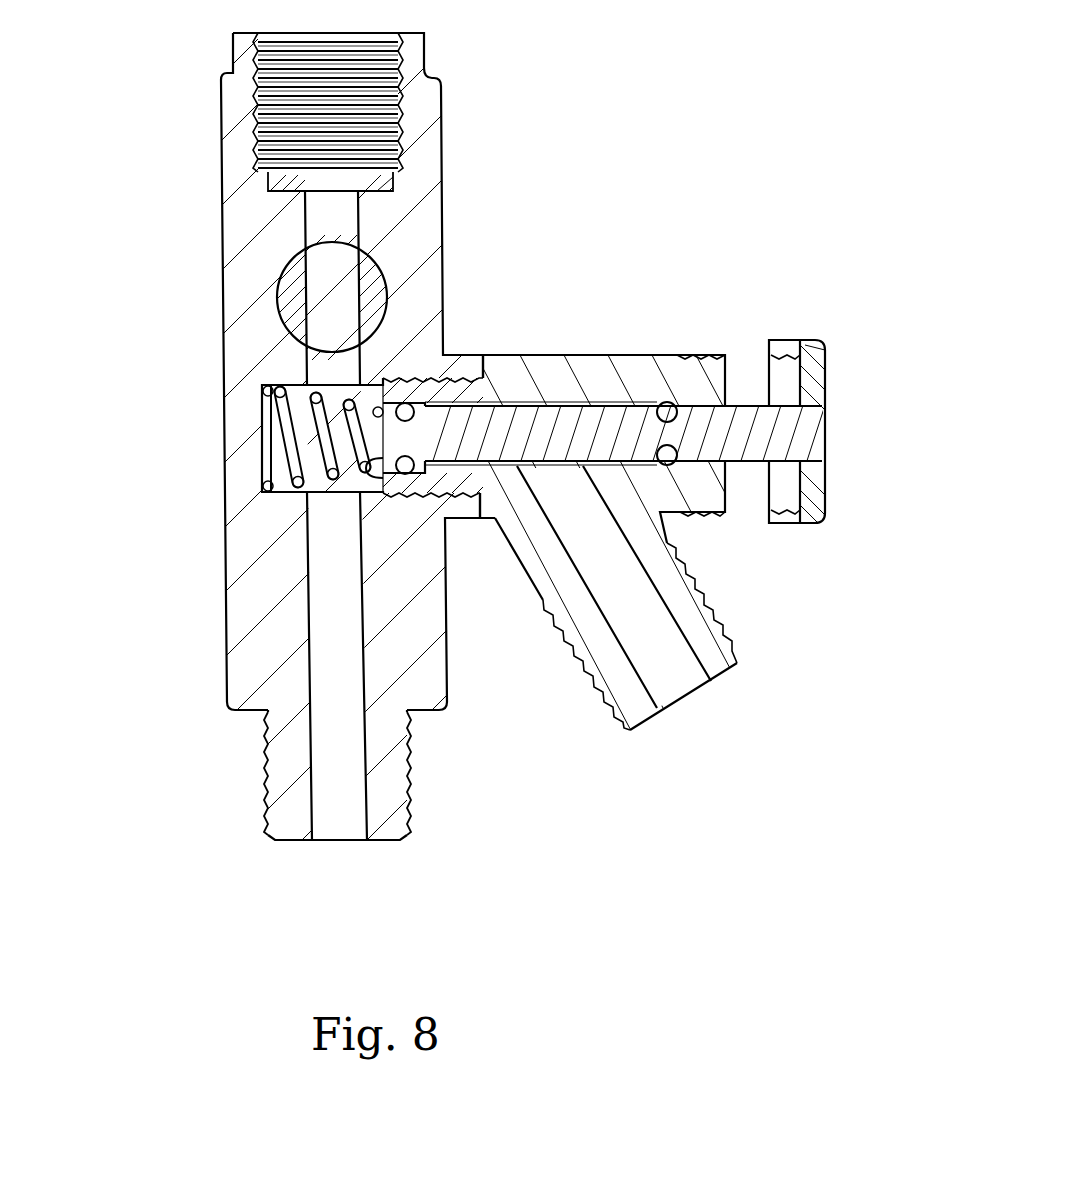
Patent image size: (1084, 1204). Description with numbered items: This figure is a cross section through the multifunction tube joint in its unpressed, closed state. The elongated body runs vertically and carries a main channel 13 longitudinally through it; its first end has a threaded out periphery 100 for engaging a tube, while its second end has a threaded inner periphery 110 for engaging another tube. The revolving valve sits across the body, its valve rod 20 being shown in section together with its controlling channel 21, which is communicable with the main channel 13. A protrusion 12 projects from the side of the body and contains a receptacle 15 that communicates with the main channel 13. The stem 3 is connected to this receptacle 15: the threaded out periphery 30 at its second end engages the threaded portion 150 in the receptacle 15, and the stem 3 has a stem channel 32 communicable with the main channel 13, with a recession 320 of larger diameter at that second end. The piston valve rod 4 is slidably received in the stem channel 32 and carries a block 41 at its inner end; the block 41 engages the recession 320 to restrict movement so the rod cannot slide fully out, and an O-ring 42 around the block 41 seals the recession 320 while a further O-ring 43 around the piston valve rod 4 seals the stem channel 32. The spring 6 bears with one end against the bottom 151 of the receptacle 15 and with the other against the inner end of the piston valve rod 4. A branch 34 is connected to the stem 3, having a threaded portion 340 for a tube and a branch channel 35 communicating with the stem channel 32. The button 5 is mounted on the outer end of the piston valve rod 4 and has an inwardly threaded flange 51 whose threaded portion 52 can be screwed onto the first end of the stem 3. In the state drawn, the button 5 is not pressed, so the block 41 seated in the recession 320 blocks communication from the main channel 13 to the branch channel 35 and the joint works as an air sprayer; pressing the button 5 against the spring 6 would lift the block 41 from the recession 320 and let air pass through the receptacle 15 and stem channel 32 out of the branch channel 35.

The threaded inner periphery 110 is at (303, 77).
The main channel 13 is at (325, 700).
The controlling channel 21 is at (318, 290).
The valve rod 20 is at (372, 258).
The receptacle 15 is at (367, 390).
The spring 6 is at (262, 388).
The bottom of the receptacle 151 is at (263, 468).
The recession 320 is at (363, 480).
The threaded out periphery 30 is at (443, 397).
The block 41 is at (422, 382).
The O-ring 42 is at (400, 474).
The piston valve rod 4 is at (740, 408).
The threaded portion 150 is at (500, 400).
The stem channel 32 is at (570, 398).
The O-ring 43 is at (670, 402).
The stem 3 is at (712, 375).
The protrusion 12 is at (463, 508).
The branch 34 is at (538, 570).
The threaded portion 340 is at (600, 690).
The branch channel 35 is at (665, 687).
The button 5 is at (812, 360).
The threaded portion 52 is at (797, 505).
The inwardly threaded flange 51 is at (780, 520).
The threaded out periphery 100 is at (280, 793).